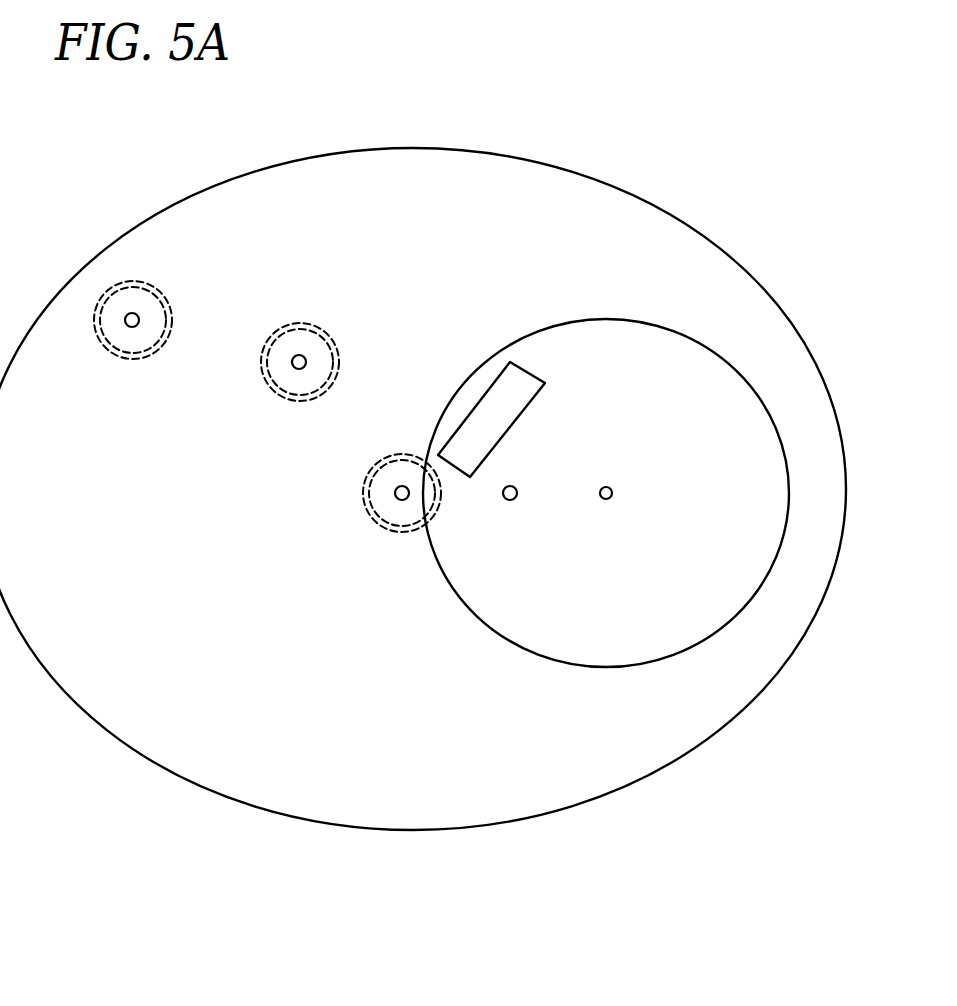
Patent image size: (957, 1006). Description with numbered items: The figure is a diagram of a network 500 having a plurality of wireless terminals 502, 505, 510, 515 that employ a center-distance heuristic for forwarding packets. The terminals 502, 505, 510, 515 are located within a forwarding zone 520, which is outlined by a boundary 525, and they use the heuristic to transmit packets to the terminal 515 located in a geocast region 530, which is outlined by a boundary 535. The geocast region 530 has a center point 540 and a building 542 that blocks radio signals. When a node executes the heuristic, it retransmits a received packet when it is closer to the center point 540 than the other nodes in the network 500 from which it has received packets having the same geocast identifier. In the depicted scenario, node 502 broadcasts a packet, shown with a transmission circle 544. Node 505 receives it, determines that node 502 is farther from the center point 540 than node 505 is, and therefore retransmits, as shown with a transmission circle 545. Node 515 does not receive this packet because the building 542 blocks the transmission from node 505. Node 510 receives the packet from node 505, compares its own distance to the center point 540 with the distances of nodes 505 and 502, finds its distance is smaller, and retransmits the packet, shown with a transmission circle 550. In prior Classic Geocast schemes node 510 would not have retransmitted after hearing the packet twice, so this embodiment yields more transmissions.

The network 500 is at (625, 120).
The wireless terminal 502 is at (128, 327).
The wireless terminal 505 is at (295, 371).
The wireless terminal 510 is at (398, 502).
The wireless terminal 515 is at (508, 501).
The forwarding zone 520 is at (423, 499).
The boundary 525 is at (418, 148).
The geocast region 530 is at (606, 496).
The boundary 535 is at (602, 318).
The center point 540 is at (606, 486).
The building 542 is at (487, 400).
The transmission circle 544 is at (150, 303).
The transmission circle 545 is at (319, 342).
The transmission circle 550 is at (397, 462).